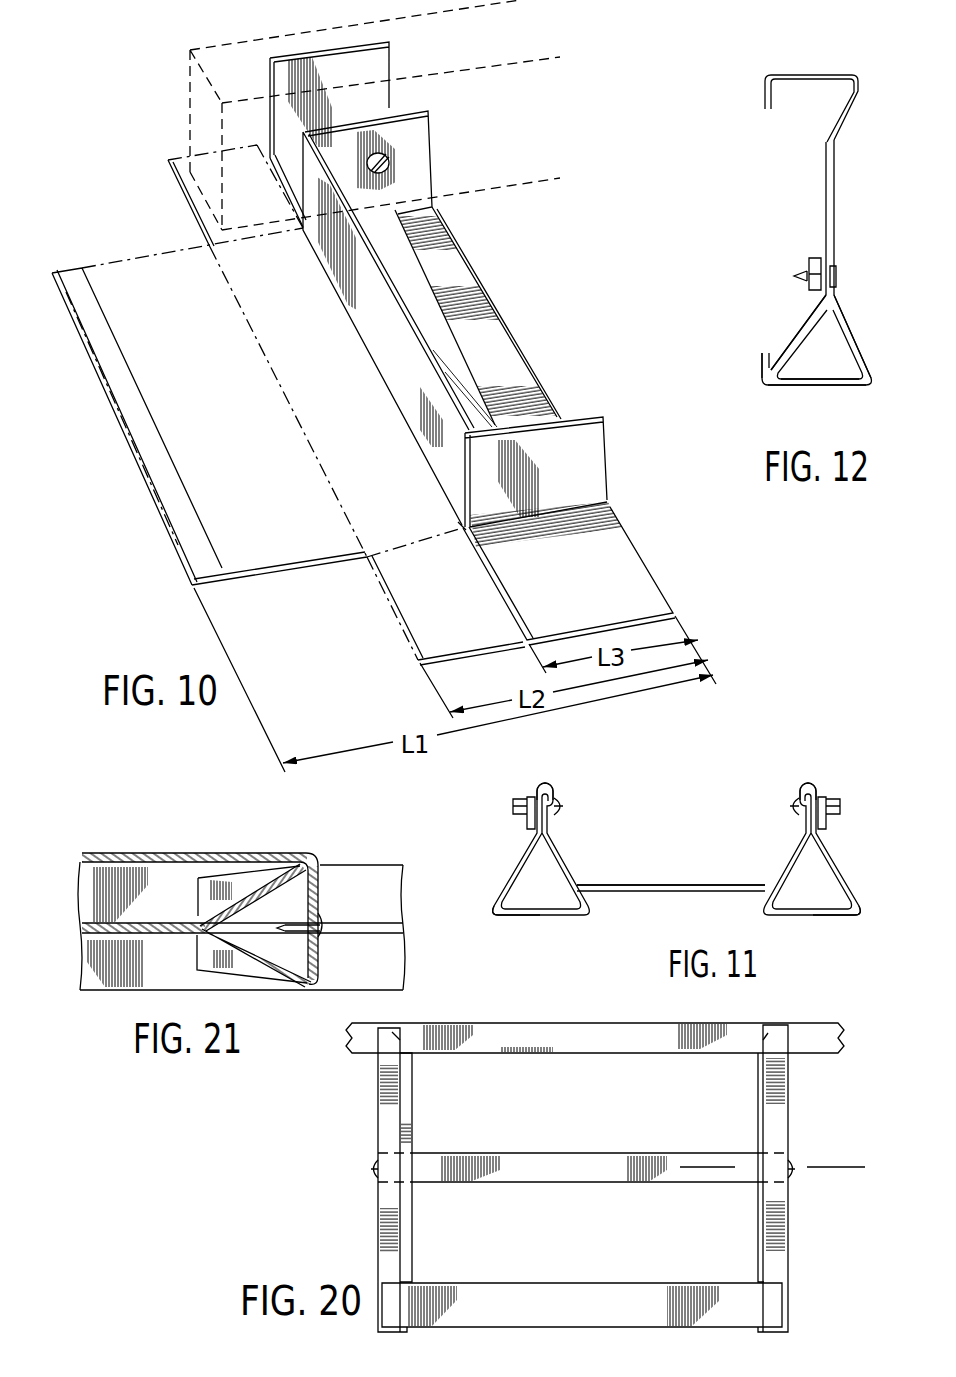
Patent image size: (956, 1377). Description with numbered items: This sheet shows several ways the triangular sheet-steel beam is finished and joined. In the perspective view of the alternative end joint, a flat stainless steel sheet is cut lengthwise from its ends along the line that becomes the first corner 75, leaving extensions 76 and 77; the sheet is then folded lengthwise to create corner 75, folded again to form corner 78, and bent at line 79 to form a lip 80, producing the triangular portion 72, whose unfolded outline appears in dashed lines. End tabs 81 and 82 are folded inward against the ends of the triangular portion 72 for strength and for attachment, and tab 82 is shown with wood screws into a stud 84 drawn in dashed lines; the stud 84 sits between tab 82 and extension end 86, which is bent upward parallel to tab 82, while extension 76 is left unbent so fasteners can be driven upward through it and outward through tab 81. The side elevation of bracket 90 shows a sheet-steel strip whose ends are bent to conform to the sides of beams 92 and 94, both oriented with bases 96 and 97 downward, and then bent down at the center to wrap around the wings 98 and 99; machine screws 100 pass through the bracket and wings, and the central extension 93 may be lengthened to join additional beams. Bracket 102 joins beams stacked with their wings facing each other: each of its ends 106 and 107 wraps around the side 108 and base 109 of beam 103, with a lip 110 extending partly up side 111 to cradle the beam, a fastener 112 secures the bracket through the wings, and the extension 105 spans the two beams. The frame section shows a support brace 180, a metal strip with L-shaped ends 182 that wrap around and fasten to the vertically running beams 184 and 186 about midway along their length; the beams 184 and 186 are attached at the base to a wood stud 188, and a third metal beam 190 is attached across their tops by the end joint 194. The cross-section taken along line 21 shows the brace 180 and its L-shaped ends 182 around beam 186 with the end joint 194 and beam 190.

In FIG. 10, the triangular portion 72 is at (457, 358).
In FIG. 10, the first corner 75 is at (458, 527).
In FIG. 10, the extension 76 is at (628, 563).
In FIG. 10, the extension 77 is at (295, 160).
In FIG. 10, the corner 78 is at (373, 277).
In FIG. 10, the bend line 79 is at (418, 270).
In FIG. 10, the lip 80 is at (450, 297).
In FIG. 10, the end tab 81 is at (597, 453).
In FIG. 10, the end tab 82 is at (422, 157).
In FIG. 10, the stud 84 is at (253, 40).
In FIG. 10, the extension end 86 is at (382, 62).
In FIG. 11, the bracket 90 is at (659, 878).
In FIG. 11, the beam 92 is at (512, 872).
In FIG. 11, the extension 93 is at (682, 892).
In FIG. 11, the beam 94 is at (835, 872).
In FIG. 11, the base 96 is at (517, 918).
In FIG. 11, the base 97 is at (810, 920).
In FIG. 11, the wing 98 is at (550, 781).
In FIG. 11, the wing 99 is at (815, 780).
In FIG. 11, the machine screw 100 is at (563, 802).
In FIG. 12, the bracket 102 is at (815, 154).
In FIG. 12, the beam 103 is at (804, 321).
In FIG. 12, the extension 105 is at (836, 184).
In FIG. 12, the end 106 is at (830, 392).
In FIG. 12, the end 107 is at (818, 74).
In FIG. 12, the side 108 is at (832, 329).
In FIG. 12, the base 109 is at (794, 389).
In FIG. 12, the lip 110 is at (819, 257).
In FIG. 12, the side 111 is at (792, 346).
In FIG. 12, the fastener 112 is at (836, 269).
In FIG. 21, the support brace 180 is at (178, 853).
In FIG. 20, the support brace 180 is at (525, 1163).
In FIG. 21, the L-shaped end 182 is at (322, 882).
In FIG. 20, the L-shaped end 182 is at (375, 1157).
In FIG. 20, the beam 184 is at (380, 1230).
In FIG. 21, the beam 186 is at (260, 882).
In FIG. 20, the beam 186 is at (780, 1272).
In FIG. 20, the wood stud 188 is at (500, 1290).
In FIG. 21, the third metal beam 190 is at (125, 975).
In FIG. 20, the third metal beam 190 is at (596, 1055).
In FIG. 21, the end joint 194 is at (203, 973).
In FIG. 20, the end joint 194 is at (392, 1032).
In FIG. 20, the section line 21 is at (692, 1170).